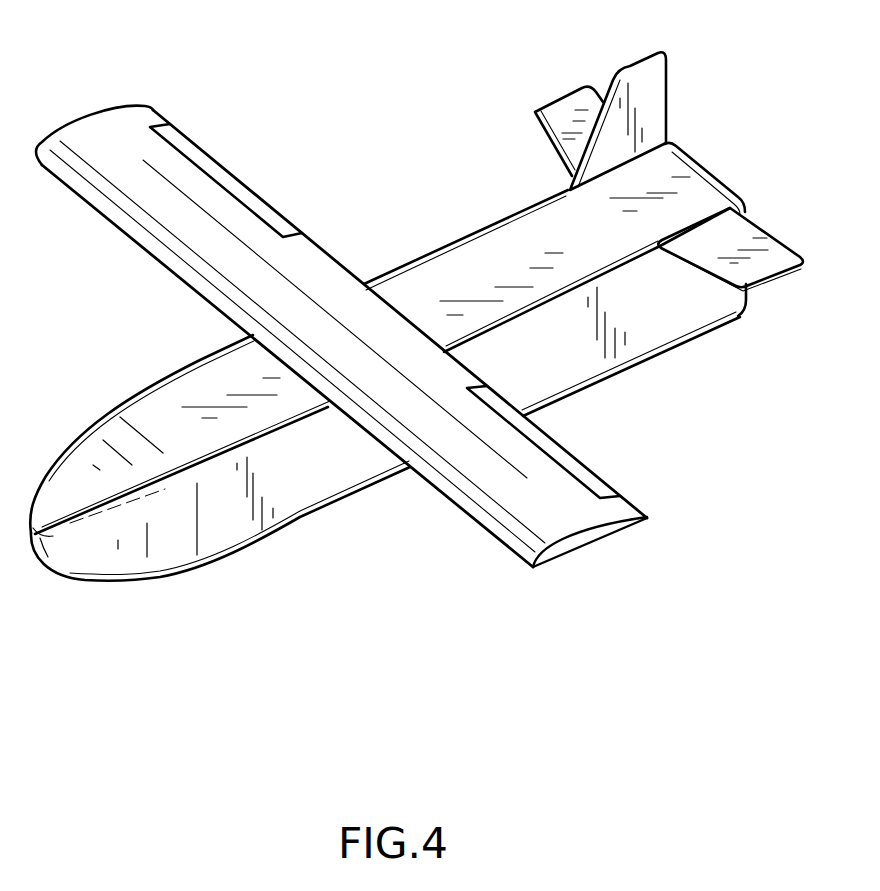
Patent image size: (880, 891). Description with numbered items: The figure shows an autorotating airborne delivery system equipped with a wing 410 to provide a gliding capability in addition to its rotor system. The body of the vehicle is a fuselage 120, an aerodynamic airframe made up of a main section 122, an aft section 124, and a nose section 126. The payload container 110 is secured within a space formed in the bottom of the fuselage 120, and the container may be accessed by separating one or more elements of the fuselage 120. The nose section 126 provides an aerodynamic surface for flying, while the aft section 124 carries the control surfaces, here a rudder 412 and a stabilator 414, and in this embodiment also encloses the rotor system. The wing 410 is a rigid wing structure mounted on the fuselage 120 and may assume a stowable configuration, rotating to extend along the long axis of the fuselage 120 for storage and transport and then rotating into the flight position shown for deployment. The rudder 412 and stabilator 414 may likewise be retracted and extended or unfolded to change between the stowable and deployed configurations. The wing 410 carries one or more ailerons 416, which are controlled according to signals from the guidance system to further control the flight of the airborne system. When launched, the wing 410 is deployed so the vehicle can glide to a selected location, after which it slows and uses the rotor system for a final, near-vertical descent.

The payload container 110 is at (320, 494).
The fuselage 120 is at (389, 290).
The main section 122 is at (223, 364).
The aft section 124 is at (717, 173).
The nose section 126 is at (113, 563).
The wing 410 is at (132, 124).
The rudder 412 is at (667, 90).
The stabilator 414 is at (780, 237).
The ailerons 416 is at (205, 156).